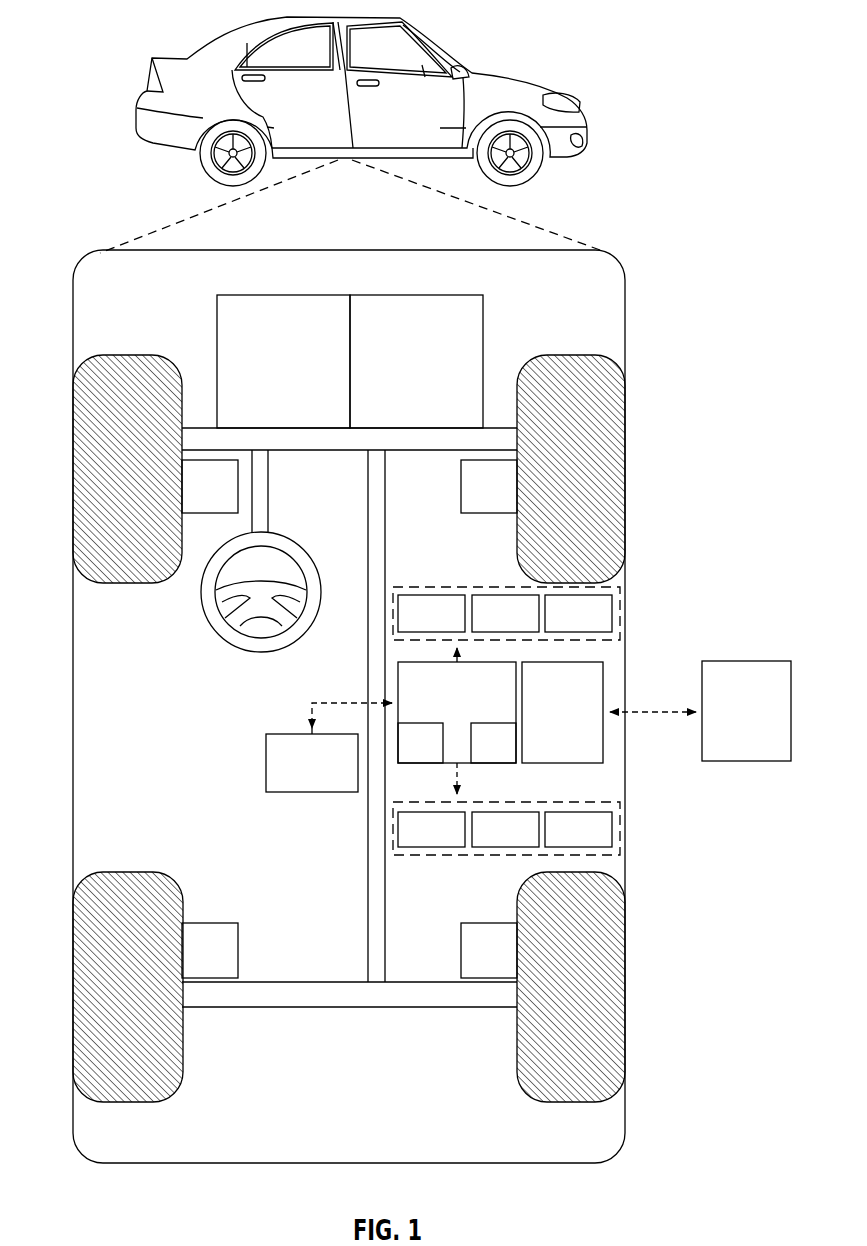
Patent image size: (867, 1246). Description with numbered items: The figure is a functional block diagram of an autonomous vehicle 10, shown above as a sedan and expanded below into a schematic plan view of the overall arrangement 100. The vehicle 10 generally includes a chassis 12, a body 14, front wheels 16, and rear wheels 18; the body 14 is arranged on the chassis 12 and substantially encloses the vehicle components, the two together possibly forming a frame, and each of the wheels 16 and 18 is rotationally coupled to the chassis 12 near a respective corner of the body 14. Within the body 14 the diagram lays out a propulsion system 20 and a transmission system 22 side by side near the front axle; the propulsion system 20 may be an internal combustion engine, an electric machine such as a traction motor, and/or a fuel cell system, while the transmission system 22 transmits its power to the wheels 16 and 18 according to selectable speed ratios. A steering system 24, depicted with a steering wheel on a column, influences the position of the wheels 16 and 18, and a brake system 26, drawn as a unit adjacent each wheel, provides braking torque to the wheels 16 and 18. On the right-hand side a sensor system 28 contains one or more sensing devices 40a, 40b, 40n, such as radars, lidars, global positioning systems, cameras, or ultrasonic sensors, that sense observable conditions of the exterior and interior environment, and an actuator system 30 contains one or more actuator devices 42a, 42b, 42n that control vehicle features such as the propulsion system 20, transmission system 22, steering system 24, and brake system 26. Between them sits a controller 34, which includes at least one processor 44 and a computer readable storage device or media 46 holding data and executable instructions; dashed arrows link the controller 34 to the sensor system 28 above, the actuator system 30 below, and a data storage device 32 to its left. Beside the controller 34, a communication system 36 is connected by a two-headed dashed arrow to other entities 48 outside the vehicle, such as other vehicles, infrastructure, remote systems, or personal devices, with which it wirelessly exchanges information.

The vehicle 10 is at (152, 88).
The vehicle system 100 is at (646, 268).
The chassis 12 is at (368, 843).
The body 14 is at (73, 673).
The front wheels 16 is at (130, 355).
The rear wheels 18 is at (125, 1102).
The propulsion system 20 is at (270, 372).
The transmission system 22 is at (403, 372).
The steering system 24 is at (272, 514).
The brake system 26 is at (198, 499).
The sensor system 28 is at (470, 587).
The actuator system 30 is at (475, 856).
The data storage device 32 is at (299, 776).
The controller 34 is at (444, 707).
The communication system 36 is at (549, 725).
The sensing device 40a is at (413, 625).
The sensing device 40b is at (487, 625).
The sensing device 40n is at (560, 625).
The actuator device 42a is at (413, 841).
The actuator device 42b is at (487, 841).
The actuator device 42n is at (560, 841).
The processor 44 is at (409, 756).
The computer readable storage device or media 46 is at (482, 756).
The other entities 48 is at (733, 724).